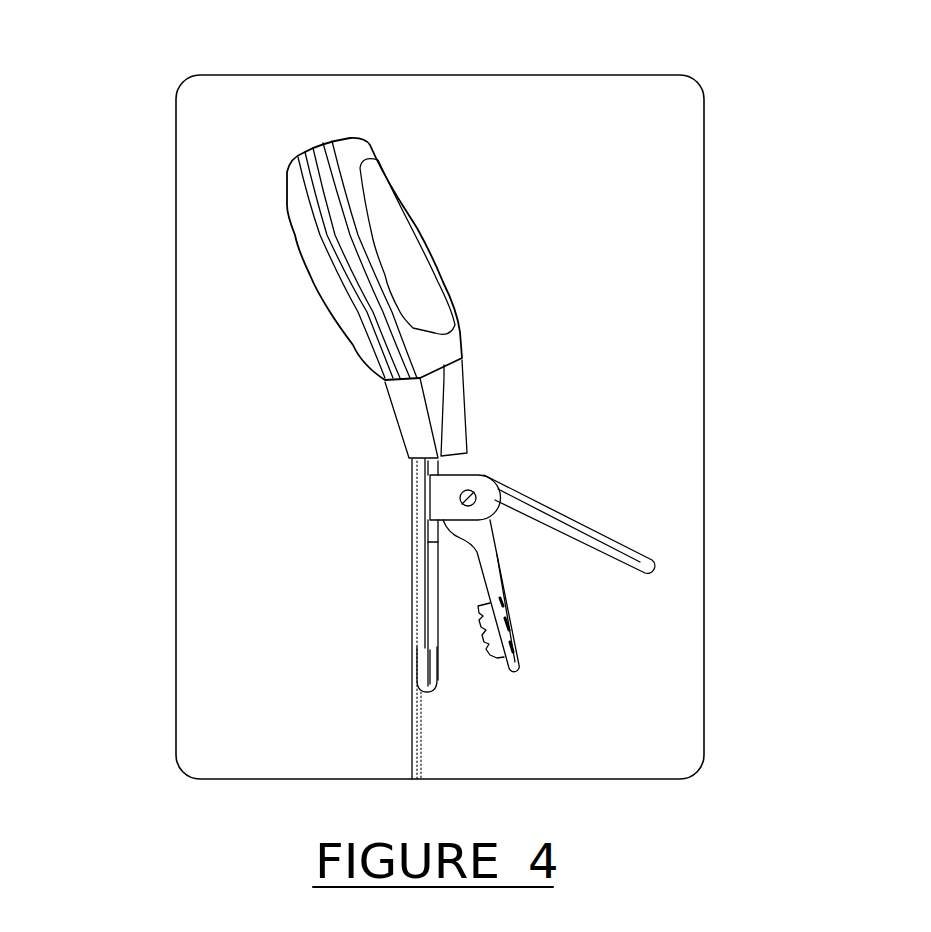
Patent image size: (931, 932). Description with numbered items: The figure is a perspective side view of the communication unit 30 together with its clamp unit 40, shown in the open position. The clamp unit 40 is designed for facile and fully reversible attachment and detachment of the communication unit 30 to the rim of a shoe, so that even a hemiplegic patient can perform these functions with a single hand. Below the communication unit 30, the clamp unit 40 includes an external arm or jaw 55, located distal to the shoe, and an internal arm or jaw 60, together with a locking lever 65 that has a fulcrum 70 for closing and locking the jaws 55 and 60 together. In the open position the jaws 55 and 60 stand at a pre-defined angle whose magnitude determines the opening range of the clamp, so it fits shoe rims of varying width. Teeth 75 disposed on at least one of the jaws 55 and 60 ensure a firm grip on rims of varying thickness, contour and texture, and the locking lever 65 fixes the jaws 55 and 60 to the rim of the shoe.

The communication unit 30 is at (458, 236).
The clamp unit 40 is at (344, 586).
The external arm or jaw 55 is at (503, 575).
The internal arm or jaw 60 is at (435, 672).
The locking lever 65 is at (622, 552).
The fulcrum 70 is at (475, 482).
The teeth 75 is at (476, 630).